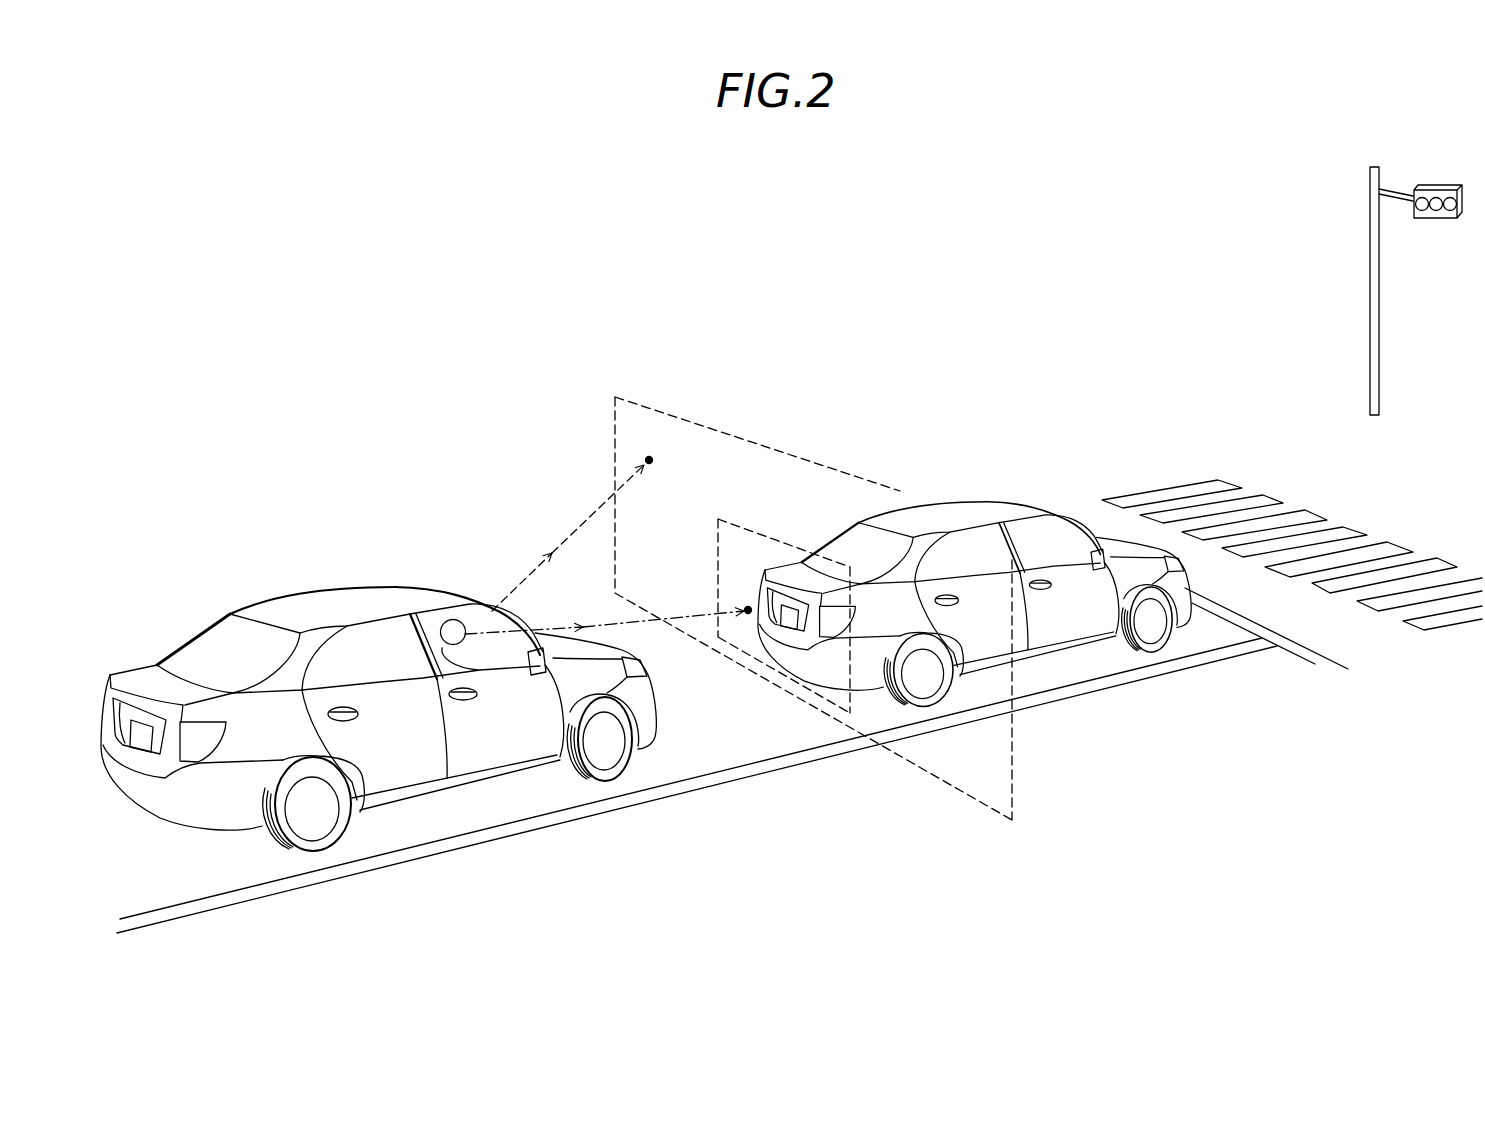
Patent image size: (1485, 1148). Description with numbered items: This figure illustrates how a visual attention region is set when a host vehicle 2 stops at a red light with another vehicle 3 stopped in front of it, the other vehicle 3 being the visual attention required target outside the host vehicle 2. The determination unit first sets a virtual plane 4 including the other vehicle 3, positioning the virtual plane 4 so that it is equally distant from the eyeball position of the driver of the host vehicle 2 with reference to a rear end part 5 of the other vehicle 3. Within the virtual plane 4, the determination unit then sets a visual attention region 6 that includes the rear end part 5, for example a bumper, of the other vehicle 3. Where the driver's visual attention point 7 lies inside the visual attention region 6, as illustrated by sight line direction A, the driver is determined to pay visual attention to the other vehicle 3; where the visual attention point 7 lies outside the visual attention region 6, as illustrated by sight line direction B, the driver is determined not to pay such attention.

The host vehicle 2 is at (333, 590).
The other vehicle 3 is at (974, 584).
The virtual plane 4 is at (908, 765).
The rear end part 5 is at (800, 662).
The visual attention region 6 is at (716, 553).
The visual attention point 7 is at (646, 459).
The sight line direction A is at (619, 620).
The sight line direction B is at (580, 524).